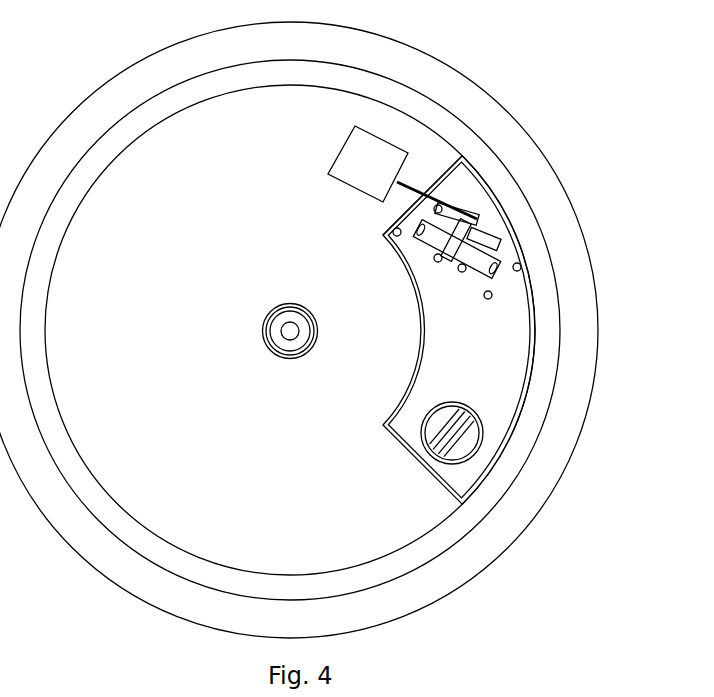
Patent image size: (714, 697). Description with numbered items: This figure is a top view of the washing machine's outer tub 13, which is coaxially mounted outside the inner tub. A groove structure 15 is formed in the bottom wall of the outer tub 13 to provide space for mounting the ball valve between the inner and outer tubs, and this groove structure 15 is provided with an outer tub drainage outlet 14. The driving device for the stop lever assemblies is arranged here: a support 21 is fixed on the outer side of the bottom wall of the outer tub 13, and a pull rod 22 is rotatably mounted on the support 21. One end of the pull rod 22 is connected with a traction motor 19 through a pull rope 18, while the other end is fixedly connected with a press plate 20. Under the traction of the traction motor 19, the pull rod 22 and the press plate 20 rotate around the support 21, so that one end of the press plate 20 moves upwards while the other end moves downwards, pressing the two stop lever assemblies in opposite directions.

The outer tub 13 is at (262, 167).
The outer tub drainage outlet 14 is at (458, 437).
The groove structure 15 is at (473, 378).
The pull rope 18 is at (467, 157).
The traction motor 19 is at (370, 163).
The press plate 20 is at (490, 267).
The support 21 is at (490, 237).
The pull rod 22 is at (478, 205).